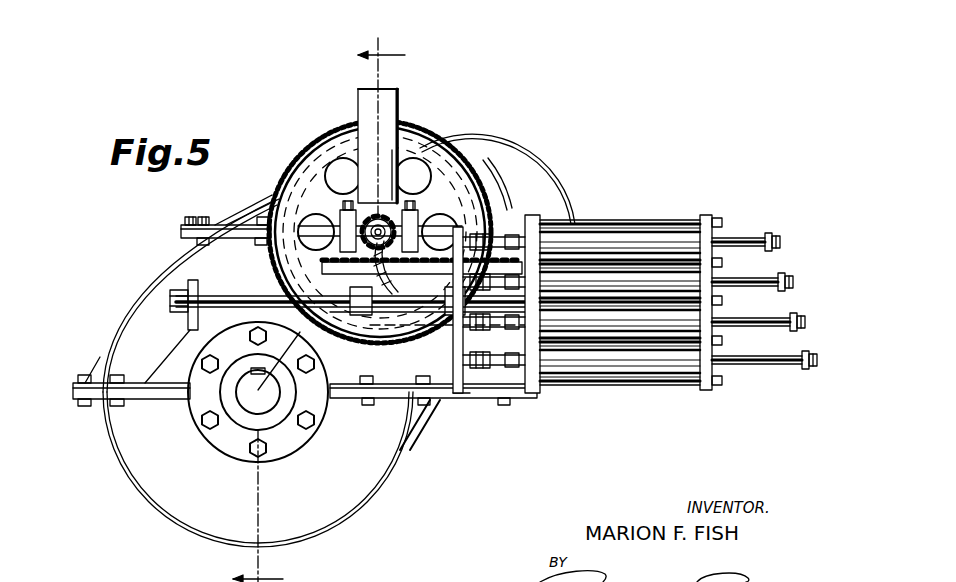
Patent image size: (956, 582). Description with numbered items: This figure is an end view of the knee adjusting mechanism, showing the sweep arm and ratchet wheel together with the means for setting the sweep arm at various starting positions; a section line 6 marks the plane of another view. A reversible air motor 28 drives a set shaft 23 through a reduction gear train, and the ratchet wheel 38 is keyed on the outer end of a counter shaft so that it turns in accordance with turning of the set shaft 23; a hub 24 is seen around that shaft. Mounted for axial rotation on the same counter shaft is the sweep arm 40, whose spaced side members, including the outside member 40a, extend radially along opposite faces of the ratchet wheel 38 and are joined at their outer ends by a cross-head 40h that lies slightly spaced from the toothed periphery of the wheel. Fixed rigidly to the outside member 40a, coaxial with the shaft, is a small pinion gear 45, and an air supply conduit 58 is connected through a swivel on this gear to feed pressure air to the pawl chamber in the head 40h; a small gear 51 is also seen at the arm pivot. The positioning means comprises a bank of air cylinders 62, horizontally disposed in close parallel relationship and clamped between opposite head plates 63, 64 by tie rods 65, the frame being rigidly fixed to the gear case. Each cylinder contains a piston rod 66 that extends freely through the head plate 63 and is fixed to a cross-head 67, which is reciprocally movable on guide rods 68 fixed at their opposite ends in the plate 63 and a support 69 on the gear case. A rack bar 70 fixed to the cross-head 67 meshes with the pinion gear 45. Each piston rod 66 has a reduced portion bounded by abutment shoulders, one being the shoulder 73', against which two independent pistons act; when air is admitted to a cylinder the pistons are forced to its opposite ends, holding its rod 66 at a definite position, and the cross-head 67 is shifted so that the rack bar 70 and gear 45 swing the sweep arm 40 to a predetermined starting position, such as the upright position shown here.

The section line 6 is at (321, 310).
The set shaft 23 is at (246, 394).
The bearing hub 24 is at (242, 410).
The reversible air motor 28 is at (520, 160).
The ratchet wheel 38 is at (432, 133).
The sweep arm 40 is at (398, 110).
The outside side member 40a is at (392, 178).
The cross-head 40h is at (363, 91).
The pinion gear 45 is at (348, 203).
The pinion 51 is at (402, 226).
The air supply conduit 58 is at (391, 282).
The air cylinders 62 is at (598, 290).
The head plate 63 is at (522, 370).
The head plate 64 is at (703, 386).
The tie rods 65 is at (694, 195).
The piston rod 66 is at (737, 240).
The cross-head 67 is at (458, 338).
The guide rods 68 is at (246, 303).
The support 69 is at (198, 290).
The rack bar 70 is at (300, 276).
The abutment shoulder 73' is at (788, 288).